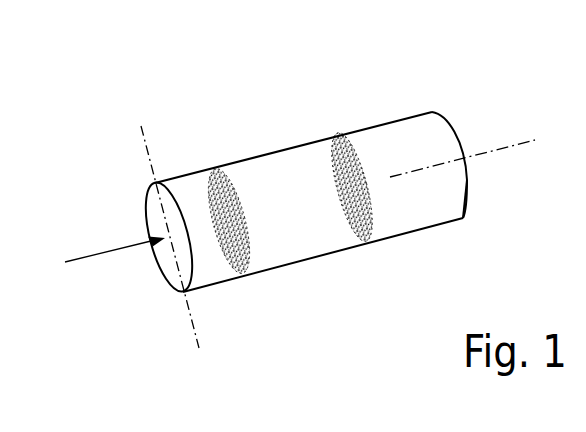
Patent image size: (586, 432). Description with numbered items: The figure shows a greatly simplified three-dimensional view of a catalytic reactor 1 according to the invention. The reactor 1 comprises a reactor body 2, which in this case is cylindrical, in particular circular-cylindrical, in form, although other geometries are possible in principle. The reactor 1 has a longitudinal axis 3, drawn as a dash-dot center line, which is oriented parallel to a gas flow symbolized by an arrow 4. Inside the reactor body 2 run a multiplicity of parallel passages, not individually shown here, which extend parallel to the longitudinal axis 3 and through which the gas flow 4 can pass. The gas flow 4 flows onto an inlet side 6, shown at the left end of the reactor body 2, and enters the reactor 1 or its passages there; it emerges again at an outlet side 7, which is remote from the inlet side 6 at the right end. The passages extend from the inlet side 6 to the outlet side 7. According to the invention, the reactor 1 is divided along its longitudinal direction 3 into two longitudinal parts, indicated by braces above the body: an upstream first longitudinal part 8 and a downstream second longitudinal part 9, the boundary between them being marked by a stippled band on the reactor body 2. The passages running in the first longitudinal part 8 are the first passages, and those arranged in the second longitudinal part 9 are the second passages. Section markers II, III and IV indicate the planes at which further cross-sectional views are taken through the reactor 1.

The catalytic reactor 1 is at (140, 300).
The reactor body 2 is at (433, 206).
The longitudinal axis 3 is at (503, 148).
The arrow 4 is at (98, 252).
The inlet side 6 is at (160, 263).
The outlet side 7 is at (467, 182).
The first longitudinal part 8 is at (233, 78).
The second longitudinal part 9 is at (397, 36).
The section plane II is at (256, 240).
The section plane III is at (386, 222).
The section plane IV is at (207, 115).